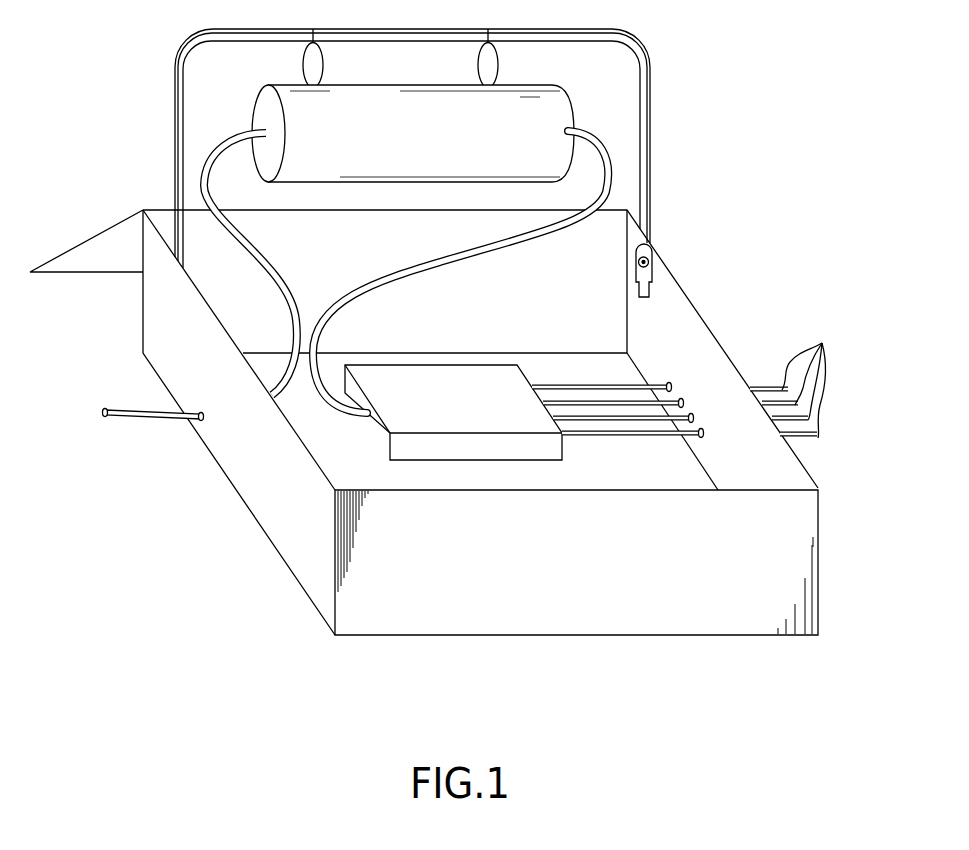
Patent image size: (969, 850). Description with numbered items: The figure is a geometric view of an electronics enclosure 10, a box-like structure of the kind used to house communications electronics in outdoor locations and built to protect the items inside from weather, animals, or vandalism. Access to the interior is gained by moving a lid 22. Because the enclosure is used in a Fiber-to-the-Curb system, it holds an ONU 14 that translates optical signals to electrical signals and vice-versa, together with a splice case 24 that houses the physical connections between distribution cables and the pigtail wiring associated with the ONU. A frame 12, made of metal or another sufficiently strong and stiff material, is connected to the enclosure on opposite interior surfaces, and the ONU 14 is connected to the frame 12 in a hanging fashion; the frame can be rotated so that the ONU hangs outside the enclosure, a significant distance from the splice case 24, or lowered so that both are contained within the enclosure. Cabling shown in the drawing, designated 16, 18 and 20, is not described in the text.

The enclosure 10 is at (427, 637).
The frame 12 is at (633, 38).
The ONU 14 is at (367, 81).
The fiber optic cables 16 is at (822, 343).
The ONU connection cables 18 is at (608, 157).
The power / drop cable 20 is at (153, 419).
The lid 22 is at (82, 275).
The splice case 24 is at (460, 374).